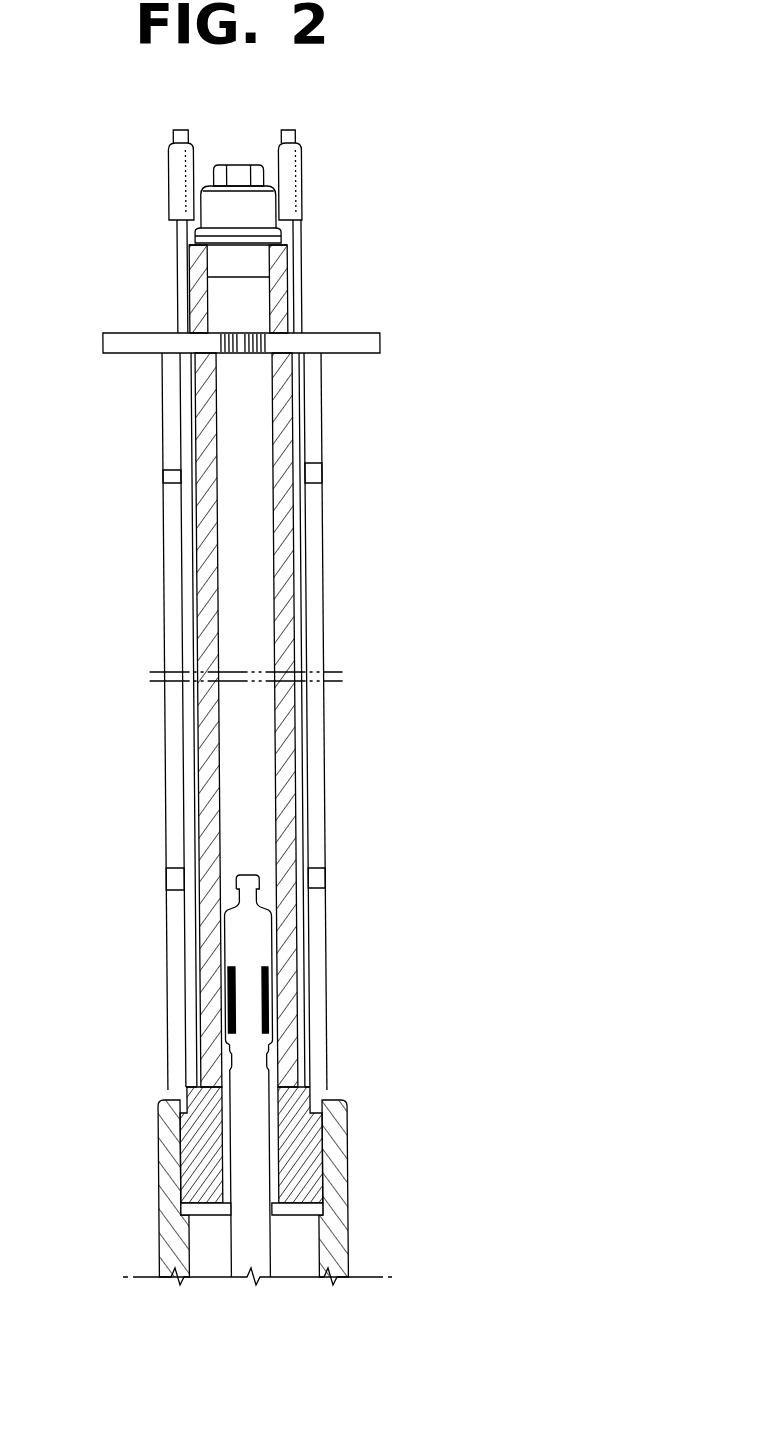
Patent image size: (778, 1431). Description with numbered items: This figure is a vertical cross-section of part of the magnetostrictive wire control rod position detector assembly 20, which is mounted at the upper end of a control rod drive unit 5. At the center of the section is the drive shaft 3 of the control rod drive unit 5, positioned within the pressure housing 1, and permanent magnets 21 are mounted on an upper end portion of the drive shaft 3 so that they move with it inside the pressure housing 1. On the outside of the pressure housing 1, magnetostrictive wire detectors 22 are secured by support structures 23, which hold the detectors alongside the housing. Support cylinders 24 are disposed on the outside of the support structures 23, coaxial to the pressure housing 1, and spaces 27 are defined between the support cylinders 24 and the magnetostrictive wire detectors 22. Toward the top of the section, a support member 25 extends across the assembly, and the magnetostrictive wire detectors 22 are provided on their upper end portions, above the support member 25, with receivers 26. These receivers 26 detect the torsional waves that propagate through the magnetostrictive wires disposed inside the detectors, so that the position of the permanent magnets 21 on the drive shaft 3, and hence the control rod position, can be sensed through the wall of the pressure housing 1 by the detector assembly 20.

The pressure housing 1 is at (188, 293).
The drive shaft 3 is at (225, 945).
The control rod drive unit 5 is at (162, 1227).
The magnetostrictive wire control rod position detector assembly 20 is at (369, 285).
The permanent magnets 21 is at (228, 1013).
The magnetostrictive wire detectors 22 is at (193, 742).
The support structures 23 is at (178, 471).
The support cylinders 24 is at (168, 987).
The support member 25 is at (130, 333).
The receivers 26 is at (306, 180).
The spaces 27 is at (313, 552).